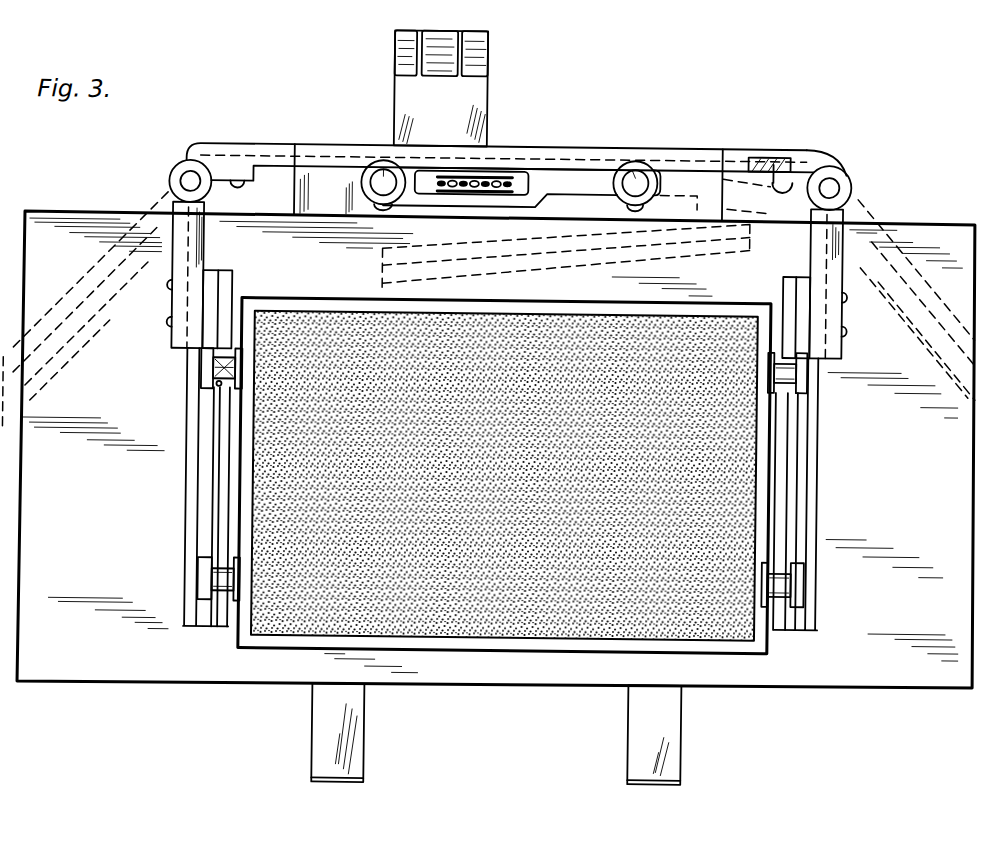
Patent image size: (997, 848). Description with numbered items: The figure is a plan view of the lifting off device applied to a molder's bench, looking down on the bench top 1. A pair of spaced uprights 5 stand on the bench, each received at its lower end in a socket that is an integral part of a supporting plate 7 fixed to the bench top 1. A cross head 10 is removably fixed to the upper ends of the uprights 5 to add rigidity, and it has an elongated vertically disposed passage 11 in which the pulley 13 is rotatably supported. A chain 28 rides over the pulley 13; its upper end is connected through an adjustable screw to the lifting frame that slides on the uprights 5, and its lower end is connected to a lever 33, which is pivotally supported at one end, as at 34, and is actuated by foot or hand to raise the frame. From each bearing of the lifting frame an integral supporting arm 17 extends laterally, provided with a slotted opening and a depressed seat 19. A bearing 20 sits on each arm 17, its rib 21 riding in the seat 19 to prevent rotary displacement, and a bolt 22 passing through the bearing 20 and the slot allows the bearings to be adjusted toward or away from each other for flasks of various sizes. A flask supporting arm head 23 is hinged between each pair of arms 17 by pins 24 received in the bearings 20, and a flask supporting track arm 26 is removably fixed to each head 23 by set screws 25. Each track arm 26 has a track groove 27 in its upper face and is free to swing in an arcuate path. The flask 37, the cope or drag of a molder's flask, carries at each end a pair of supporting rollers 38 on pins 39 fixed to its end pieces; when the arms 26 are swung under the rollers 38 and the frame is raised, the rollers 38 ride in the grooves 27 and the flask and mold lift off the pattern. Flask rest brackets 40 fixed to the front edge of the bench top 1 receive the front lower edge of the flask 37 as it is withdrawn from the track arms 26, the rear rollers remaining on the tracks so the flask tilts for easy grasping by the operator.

The bench top 1 is at (489, 440).
The uprights 5 is at (383, 174).
The supporting plate 7 is at (330, 183).
The cross head 10 is at (577, 174).
The passage 11 is at (522, 172).
The pulley 13 is at (460, 190).
The supporting arm 17 is at (244, 150).
The depressed seat 19 is at (756, 153).
The bearing 20 is at (173, 181).
The rib 21 is at (773, 173).
The bolt 22 is at (758, 185).
The flask supporting arm head 23 is at (190, 246).
The pin 24 is at (188, 178).
The set screw 25 is at (172, 321).
The flask supporting track arm 26 is at (195, 471).
The track groove 27 is at (213, 498).
The chain 28 is at (492, 162).
The lever 33 is at (441, 48).
The pivot 34 is at (485, 52).
The flask 37 is at (510, 636).
The supporting roller 38 is at (215, 366).
The pin 39 is at (220, 384).
The flask rest bracket 40 is at (354, 728).